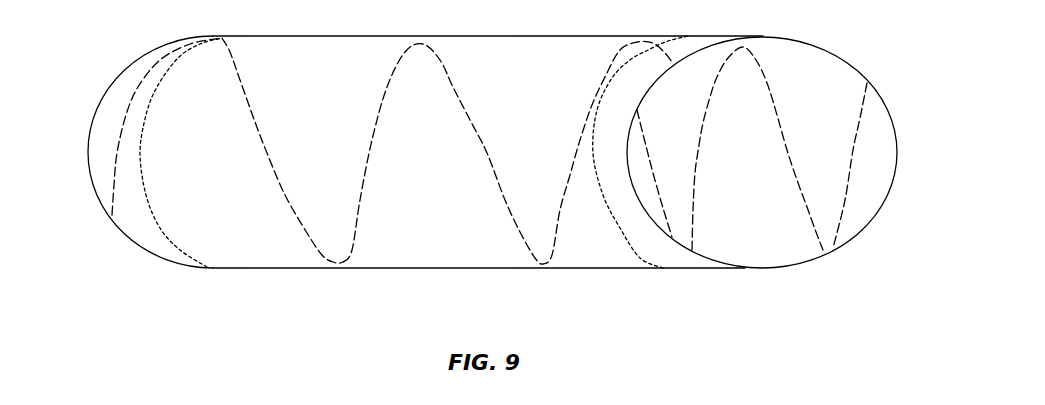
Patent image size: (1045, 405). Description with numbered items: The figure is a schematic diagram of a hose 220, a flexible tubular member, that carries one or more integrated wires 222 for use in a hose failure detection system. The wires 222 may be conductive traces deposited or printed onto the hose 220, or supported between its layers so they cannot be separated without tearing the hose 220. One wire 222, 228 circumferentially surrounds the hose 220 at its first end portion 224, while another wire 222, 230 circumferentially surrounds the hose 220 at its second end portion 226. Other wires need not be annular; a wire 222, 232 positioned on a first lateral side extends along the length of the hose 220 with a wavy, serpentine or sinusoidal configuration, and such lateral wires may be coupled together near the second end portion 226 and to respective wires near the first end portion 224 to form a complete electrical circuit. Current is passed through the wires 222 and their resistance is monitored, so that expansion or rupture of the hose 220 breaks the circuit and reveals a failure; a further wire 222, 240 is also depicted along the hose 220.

The hose 220 is at (492, 36).
The integrated wires 222 is at (478, 157).
The first end portion 224 is at (897, 152).
The second end portion 226 is at (88, 152).
The wire 228 is at (620, 232).
The wire 230 is at (152, 212).
The wire 232 is at (862, 105).
The coil turn 240 is at (308, 237).